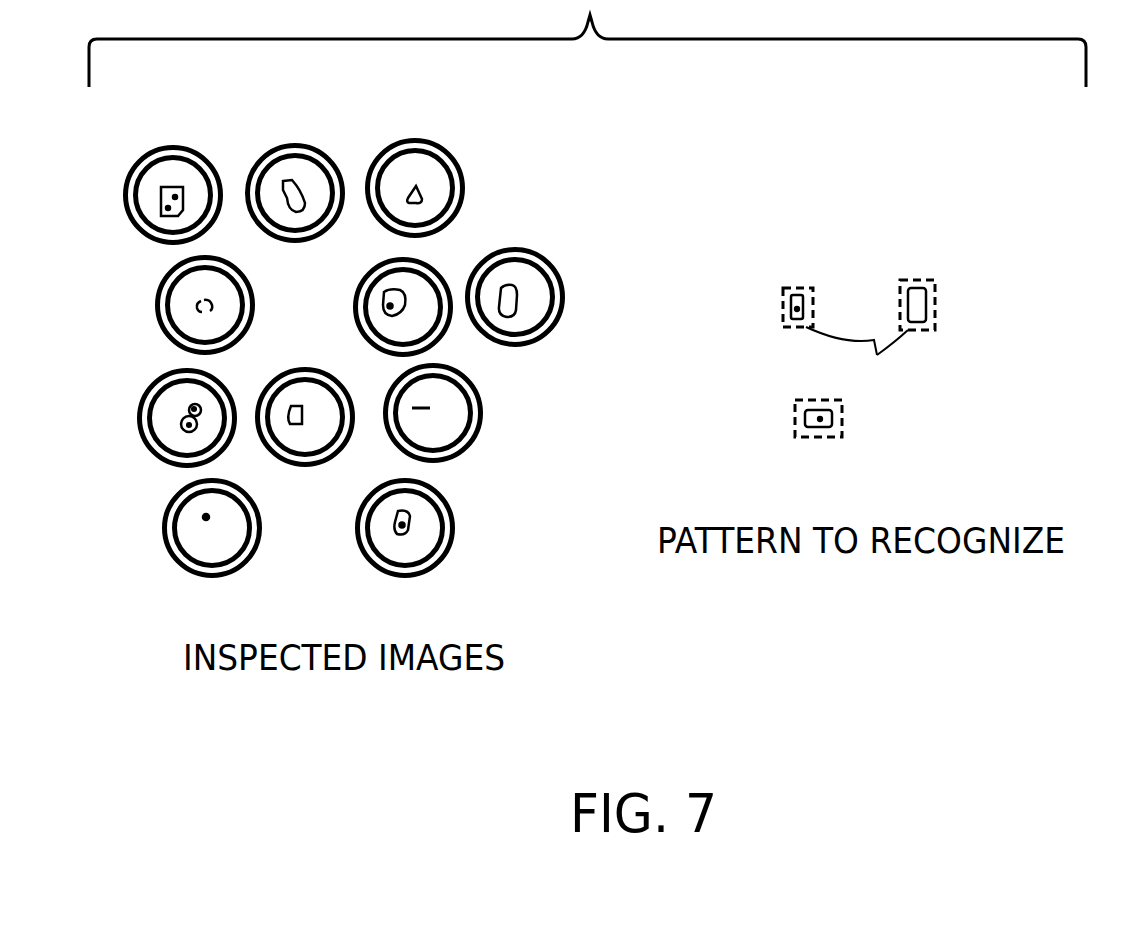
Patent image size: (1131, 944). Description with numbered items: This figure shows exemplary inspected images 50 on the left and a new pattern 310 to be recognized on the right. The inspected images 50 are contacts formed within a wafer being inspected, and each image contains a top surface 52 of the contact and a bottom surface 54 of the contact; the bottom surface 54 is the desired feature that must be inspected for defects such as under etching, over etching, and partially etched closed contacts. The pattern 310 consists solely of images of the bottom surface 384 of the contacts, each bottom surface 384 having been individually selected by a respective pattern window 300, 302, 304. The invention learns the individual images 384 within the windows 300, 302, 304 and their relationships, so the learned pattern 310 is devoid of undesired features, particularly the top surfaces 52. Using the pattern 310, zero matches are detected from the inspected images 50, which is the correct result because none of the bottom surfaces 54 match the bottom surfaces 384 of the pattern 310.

The inspected images 50 is at (441, 154).
The top surface 52 is at (457, 170).
The bottom surface 54 is at (421, 197).
The pattern window 300 is at (801, 288).
The pattern window 302 is at (920, 280).
The pattern window 304 is at (835, 437).
The bottom surface image 384 is at (840, 418).
The pattern to be recognized 310 is at (947, 357).